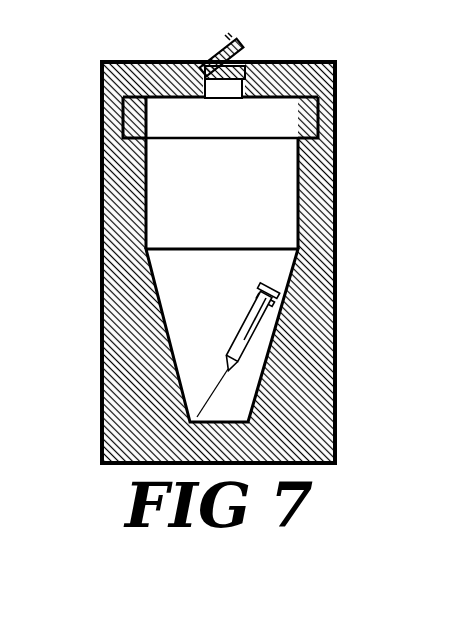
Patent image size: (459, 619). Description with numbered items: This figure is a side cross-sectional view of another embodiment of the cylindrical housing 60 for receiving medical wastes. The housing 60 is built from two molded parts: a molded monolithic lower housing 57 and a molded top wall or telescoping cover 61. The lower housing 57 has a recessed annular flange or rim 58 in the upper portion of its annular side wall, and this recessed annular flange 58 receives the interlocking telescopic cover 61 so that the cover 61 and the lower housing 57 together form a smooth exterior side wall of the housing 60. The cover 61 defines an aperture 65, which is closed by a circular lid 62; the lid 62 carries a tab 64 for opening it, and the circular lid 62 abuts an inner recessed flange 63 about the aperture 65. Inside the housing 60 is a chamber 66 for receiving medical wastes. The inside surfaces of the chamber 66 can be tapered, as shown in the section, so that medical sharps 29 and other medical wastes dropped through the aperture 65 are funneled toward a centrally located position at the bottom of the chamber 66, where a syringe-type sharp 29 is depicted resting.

The medical sharps 29 is at (240, 333).
The lower housing 57 is at (336, 227).
The recessed annular flange 58 is at (102, 118).
The cylindrical housing 60 is at (86, 261).
The telescoping cover 61 is at (320, 62).
The circular lid 62 is at (205, 63).
The inner recessed flange 63 is at (234, 67).
The tab 64 is at (228, 37).
The aperture 65 is at (212, 98).
The chamber 66 is at (216, 292).